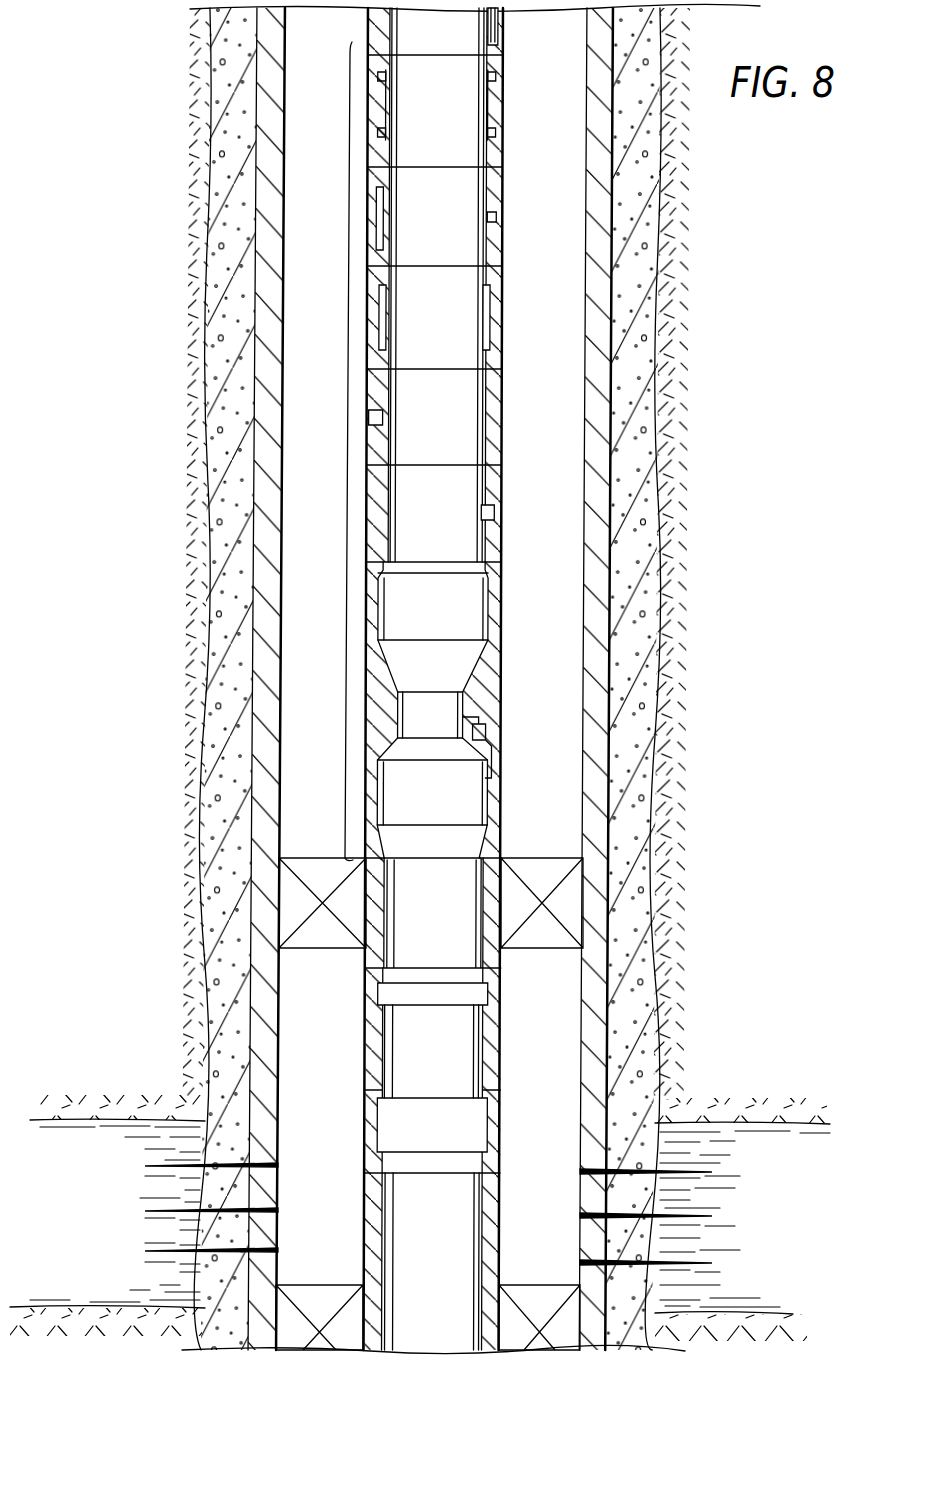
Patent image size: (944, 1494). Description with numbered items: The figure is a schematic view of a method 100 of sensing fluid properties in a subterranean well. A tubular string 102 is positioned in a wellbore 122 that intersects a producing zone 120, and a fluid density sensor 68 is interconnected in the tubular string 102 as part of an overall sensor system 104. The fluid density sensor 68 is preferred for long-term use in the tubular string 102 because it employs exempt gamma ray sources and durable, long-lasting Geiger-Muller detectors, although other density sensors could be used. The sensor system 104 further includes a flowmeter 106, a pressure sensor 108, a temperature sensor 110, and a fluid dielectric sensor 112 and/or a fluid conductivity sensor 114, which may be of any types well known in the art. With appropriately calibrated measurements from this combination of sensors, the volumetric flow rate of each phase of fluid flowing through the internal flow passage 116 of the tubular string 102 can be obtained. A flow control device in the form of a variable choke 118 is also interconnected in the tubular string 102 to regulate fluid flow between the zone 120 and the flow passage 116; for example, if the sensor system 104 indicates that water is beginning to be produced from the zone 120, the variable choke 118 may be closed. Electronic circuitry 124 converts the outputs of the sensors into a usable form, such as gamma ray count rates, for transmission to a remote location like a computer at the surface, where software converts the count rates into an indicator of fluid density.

The method 100 is at (158, 78).
The tubular string 102 is at (368, 25).
The sensor system 104 is at (345, 457).
The flowmeter 106 is at (503, 690).
The pressure sensor 108 is at (498, 512).
The temperature sensor 110 is at (385, 418).
The fluid dielectric sensor 112 is at (503, 313).
The fluid conductivity sensor 114 is at (503, 108).
The internal flow passage 116 is at (449, 927).
The variable choke 118 is at (505, 1045).
The zone 120 is at (763, 1147).
The wellbore 122 is at (280, 976).
The electronic circuitry 124 is at (502, 27).
The fluid density sensor 68 is at (503, 200).